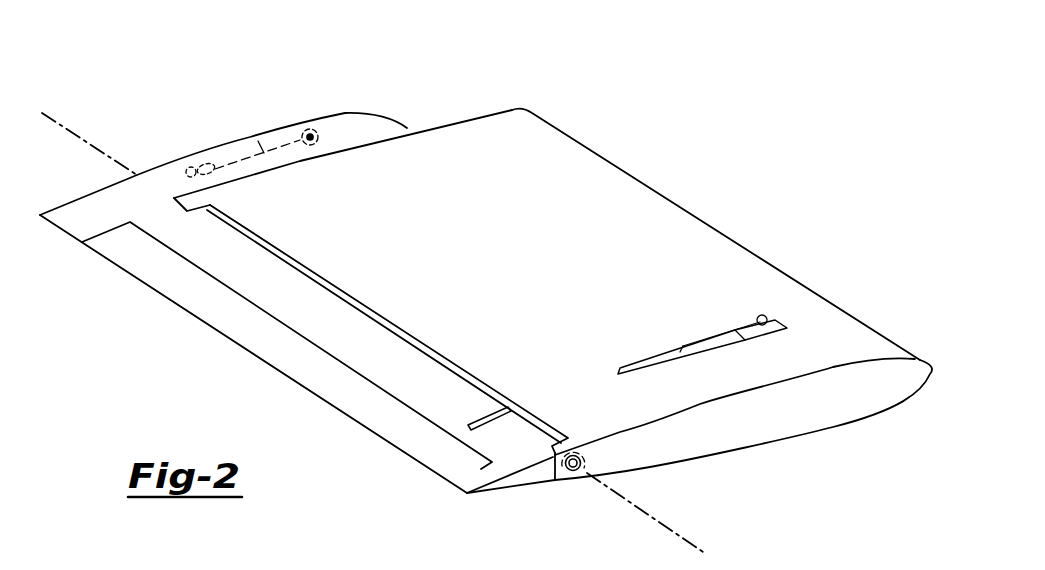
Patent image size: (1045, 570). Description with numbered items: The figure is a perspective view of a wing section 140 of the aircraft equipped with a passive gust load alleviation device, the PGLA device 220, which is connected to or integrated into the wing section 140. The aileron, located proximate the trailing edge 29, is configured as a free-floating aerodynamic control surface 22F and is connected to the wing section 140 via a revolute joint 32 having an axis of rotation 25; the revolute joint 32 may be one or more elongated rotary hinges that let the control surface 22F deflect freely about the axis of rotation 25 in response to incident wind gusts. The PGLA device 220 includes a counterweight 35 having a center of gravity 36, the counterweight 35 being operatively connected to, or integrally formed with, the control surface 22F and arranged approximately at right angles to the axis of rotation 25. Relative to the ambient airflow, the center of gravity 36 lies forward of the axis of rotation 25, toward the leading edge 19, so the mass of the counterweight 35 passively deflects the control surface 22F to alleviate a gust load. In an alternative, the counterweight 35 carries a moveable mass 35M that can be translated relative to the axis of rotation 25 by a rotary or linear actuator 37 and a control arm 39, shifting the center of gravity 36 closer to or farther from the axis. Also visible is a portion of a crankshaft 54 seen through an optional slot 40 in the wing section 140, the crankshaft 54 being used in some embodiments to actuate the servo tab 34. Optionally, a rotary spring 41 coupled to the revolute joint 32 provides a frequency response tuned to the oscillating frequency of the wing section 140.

The passive gust load alleviation (PGLA) device 220 is at (163, 86).
The leading edge 19 is at (600, 148).
The wing section 140 is at (645, 217).
The counterweight 35 is at (343, 127).
The moveable mass 35M is at (287, 127).
The center of gravity 36 is at (310, 132).
The rotary or linear actuator 37 is at (196, 160).
The control arm 39 is at (261, 148).
The free-floating aerodynamic control surface 22F is at (240, 260).
The servo tab 34 is at (240, 325).
The trailing edge 29 is at (276, 372).
The revolute joint 32 is at (568, 477).
The rotary spring 41 is at (583, 480).
The axis of rotation 25 is at (667, 522).
The slot 40 is at (772, 308).
The crankshaft 54 is at (758, 314).